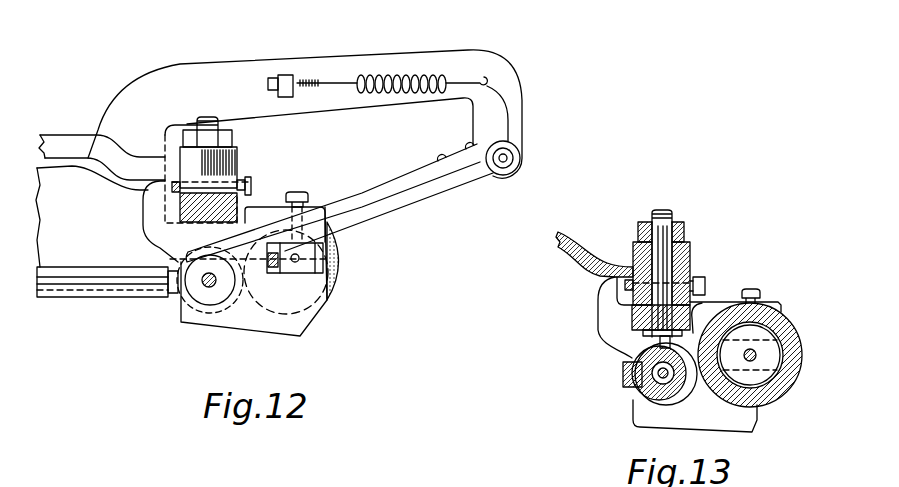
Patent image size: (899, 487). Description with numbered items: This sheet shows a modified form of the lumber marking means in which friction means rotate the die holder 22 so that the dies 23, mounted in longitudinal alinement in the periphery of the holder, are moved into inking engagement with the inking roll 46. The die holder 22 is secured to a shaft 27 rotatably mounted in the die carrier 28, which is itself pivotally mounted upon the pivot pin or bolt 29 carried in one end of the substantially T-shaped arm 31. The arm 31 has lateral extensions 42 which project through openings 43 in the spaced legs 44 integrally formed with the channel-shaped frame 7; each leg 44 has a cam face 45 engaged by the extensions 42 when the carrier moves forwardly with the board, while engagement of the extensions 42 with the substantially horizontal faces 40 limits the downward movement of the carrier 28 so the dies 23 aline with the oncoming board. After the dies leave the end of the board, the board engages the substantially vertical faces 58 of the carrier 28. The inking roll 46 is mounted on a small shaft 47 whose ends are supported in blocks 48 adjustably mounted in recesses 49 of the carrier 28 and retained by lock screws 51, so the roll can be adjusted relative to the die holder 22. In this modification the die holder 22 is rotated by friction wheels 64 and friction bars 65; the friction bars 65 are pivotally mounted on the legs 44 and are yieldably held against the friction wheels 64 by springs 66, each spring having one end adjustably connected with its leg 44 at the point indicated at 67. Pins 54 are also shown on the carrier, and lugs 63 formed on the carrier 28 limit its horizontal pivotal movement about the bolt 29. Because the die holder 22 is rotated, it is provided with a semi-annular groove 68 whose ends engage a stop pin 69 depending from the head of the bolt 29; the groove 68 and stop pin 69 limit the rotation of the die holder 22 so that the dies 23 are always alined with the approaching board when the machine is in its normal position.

In FIG. 12, the channel-shaped frame 7 is at (65, 252).
In FIG. 12, the die holder 22 is at (197, 315).
In FIG. 13, the die holder 22 is at (637, 400).
In FIG. 12, the dies 23 is at (168, 283).
In FIG. 13, the dies 23 is at (623, 376).
In FIG. 12, the shaft 27 is at (196, 289).
In FIG. 12, the die carrier 28 is at (295, 323).
In FIG. 13, the die carrier 28 is at (632, 323).
In FIG. 12, the pivot pin 29 is at (207, 117).
In FIG. 13, the pivot pin 29 is at (702, 250).
In FIG. 12, the T-shaped arm 31 is at (53, 137).
In FIG. 13, the T-shaped arm 31 is at (703, 242).
In FIG. 12, the horizontal faces 40 is at (243, 208).
In FIG. 12, the lateral extensions 42 is at (180, 202).
In FIG. 12, the openings 43 is at (468, 112).
In FIG. 12, the spaced legs 44 is at (487, 62).
In FIG. 12, the cam face 45 is at (348, 180).
In FIG. 12, the inking roll 46 is at (343, 277).
In FIG. 13, the inking roll 46 is at (777, 333).
In FIG. 12, the shaft 47 is at (299, 258).
In FIG. 13, the shaft 47 is at (752, 352).
In FIG. 12, the blocks 48 is at (317, 263).
In FIG. 12, the recesses 49 is at (272, 273).
In FIG. 12, the lock screws 51 is at (303, 192).
In FIG. 12, the pins 54 is at (513, 157).
In FIG. 12, the vertical faces 58 is at (200, 284).
In FIG. 12, the lugs 63 is at (143, 197).
In FIG. 13, the lugs 63 is at (607, 285).
In FIG. 12, the friction wheels 64 is at (175, 185).
In FIG. 13, the friction wheels 64 is at (629, 283).
In FIG. 12, the friction bars 65 is at (368, 190).
In FIG. 12, the springs 66 is at (377, 77).
In FIG. 12, the adjustable spring connection 67 is at (277, 78).
In FIG. 13, the semi-annular groove 68 is at (663, 405).
In FIG. 13, the stop pin 69 is at (668, 343).